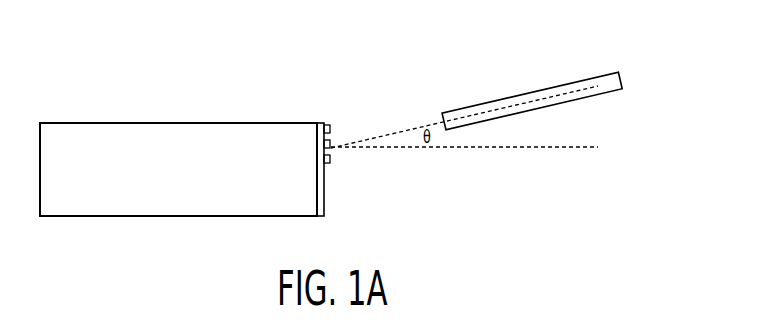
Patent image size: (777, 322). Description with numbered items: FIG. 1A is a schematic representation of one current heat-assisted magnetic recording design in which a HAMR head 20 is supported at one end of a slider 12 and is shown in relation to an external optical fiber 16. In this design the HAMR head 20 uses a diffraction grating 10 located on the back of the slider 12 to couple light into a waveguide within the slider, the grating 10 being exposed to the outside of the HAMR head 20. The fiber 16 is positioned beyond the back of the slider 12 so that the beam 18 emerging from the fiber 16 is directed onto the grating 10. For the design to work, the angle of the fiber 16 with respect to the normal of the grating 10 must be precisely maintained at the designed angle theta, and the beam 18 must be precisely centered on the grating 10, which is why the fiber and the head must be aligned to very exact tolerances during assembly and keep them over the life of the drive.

The diffraction grating 10 is at (328, 164).
The slider 12 is at (115, 140).
The fiber 16 is at (532, 100).
The beam 18 is at (401, 122).
The HAMR head 20 is at (323, 212).